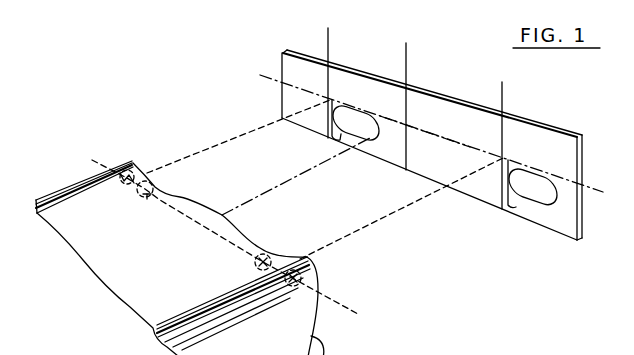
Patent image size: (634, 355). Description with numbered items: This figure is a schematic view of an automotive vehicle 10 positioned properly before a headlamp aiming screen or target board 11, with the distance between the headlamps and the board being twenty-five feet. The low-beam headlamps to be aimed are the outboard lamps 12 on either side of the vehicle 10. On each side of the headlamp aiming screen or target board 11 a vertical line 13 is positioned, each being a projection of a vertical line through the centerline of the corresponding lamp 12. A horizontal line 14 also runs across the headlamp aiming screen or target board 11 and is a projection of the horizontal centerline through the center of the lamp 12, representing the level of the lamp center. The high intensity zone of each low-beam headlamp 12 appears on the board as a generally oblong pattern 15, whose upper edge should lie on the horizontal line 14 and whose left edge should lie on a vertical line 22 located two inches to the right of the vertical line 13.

The automotive vehicle 10 is at (70, 178).
The headlamp aiming screen or target board 11 is at (369, 75).
The outboard lamps 12 is at (136, 160).
The vertical line 13 is at (328, 44).
The horizontal line 14 is at (433, 134).
The oblong pattern 15 is at (372, 140).
The vertical line 22 is at (340, 138).